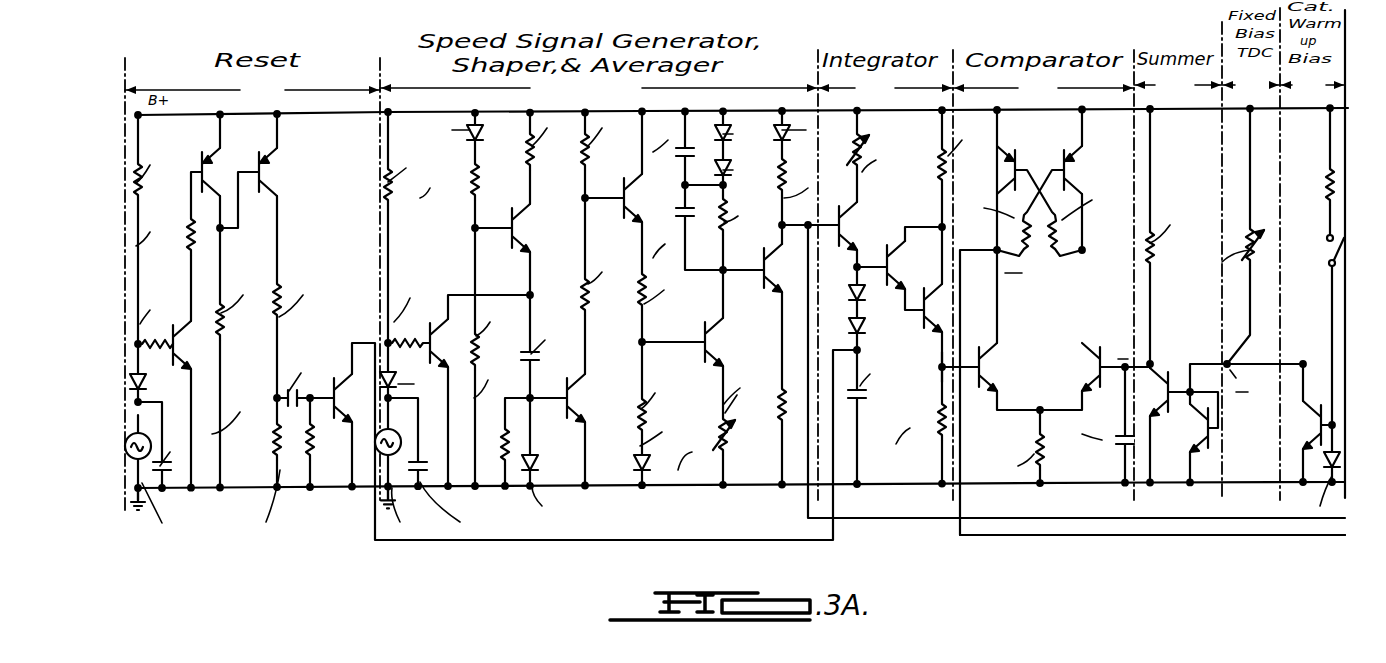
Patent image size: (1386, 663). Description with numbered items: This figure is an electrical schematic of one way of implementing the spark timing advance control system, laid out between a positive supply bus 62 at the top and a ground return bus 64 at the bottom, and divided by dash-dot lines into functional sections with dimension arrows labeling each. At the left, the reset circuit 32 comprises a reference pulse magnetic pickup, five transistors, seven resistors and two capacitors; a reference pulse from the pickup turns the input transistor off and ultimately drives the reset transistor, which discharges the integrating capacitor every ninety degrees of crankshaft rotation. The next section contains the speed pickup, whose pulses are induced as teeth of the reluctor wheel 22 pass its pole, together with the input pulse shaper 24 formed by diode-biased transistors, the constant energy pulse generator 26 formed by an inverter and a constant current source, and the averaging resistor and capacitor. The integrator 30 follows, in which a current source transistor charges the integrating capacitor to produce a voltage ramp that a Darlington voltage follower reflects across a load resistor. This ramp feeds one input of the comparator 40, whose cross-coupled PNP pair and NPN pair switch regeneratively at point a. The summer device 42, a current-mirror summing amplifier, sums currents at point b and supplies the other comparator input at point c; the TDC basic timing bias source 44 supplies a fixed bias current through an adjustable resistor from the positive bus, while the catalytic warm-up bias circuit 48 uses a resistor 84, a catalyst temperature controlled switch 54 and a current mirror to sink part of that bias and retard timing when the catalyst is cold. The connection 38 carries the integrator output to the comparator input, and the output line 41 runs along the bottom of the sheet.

The reset circuit 32 is at (491, 308).
The reluctor wheel 22 is at (860, 302).
The input pulse shaper 24 is at (860, 302).
The constant energy pulse generator 26 is at (860, 302).
The integrator 30 is at (861, 282).
The comparator 40 is at (1115, 306).
The summer device 42 is at (1221, 280).
The TDC basic timing bias source 44 is at (1243, 220).
The catalytic warm-up bias circuit 48 is at (1170, 506).
The B+ bus 62 is at (310, 122).
The ground return bus 64 is at (660, 487).
The comparator input connection 38 is at (950, 367).
The output line 41 is at (1178, 538).
The resistor R84 84 is at (1326, 167).
The switch S54 54 is at (1326, 265).